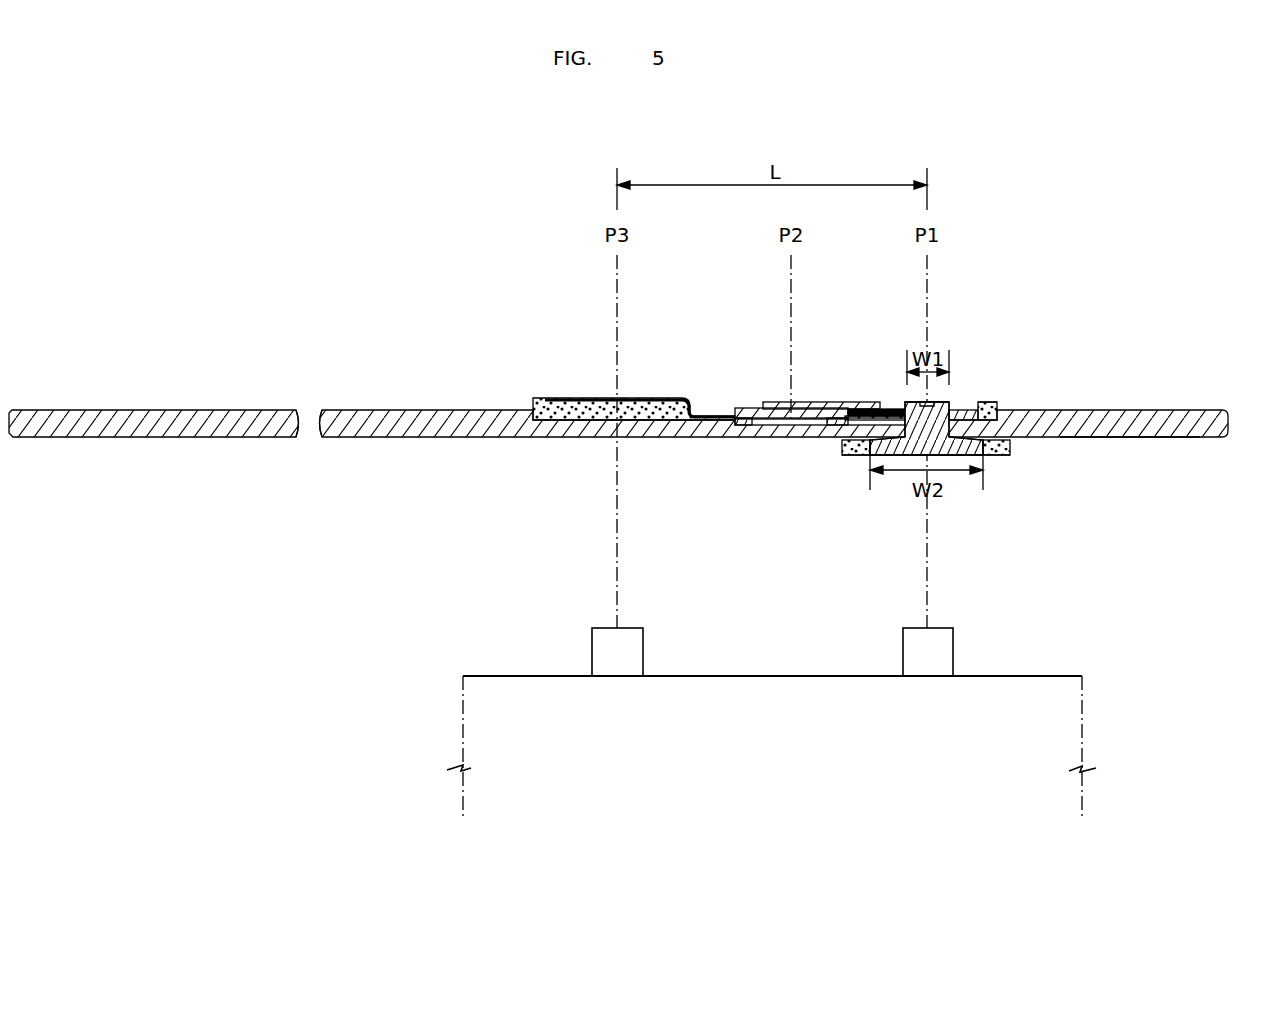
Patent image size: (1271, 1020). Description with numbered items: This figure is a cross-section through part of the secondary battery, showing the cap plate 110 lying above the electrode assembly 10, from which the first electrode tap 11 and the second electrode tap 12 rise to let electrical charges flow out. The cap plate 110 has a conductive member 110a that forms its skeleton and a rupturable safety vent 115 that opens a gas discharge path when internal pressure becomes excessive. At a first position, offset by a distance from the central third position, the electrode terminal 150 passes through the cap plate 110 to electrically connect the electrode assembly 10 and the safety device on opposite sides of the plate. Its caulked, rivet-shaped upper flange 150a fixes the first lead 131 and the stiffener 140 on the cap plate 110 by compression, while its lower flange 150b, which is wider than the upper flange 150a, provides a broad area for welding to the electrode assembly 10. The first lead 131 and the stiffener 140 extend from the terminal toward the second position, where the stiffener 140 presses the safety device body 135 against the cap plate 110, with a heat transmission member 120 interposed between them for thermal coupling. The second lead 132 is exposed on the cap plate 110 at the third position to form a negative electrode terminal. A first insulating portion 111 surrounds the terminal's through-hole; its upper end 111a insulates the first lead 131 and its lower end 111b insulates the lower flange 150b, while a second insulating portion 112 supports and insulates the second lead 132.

The electrode assembly 10 is at (1070, 645).
The first electrode tap 11 is at (943, 655).
The second electrode tap 12 is at (634, 655).
The cap plate 110 is at (1160, 390).
The conductive member 110a is at (1132, 432).
The first insulating portion 111 is at (1020, 396).
The upper end of first insulating portion 111a is at (993, 402).
The lower end of first insulating portion 111b is at (1012, 448).
The second insulating portion 112 is at (648, 420).
The safety vent 115 is at (318, 406).
The heat transmission member 120 is at (838, 427).
The first lead 131 is at (884, 409).
The second lead 132 is at (600, 398).
The safety device body 135 is at (756, 409).
The stiffener 140 is at (815, 402).
The electrode terminal 150 is at (938, 420).
The upper flange 150a is at (906, 402).
The lower flange 150b is at (981, 454).